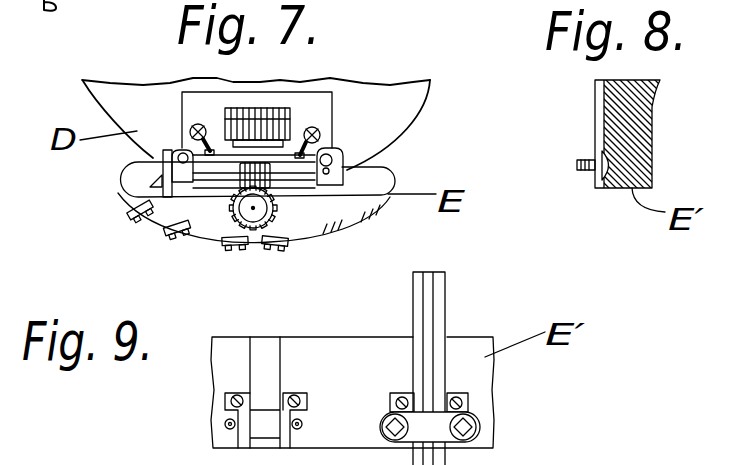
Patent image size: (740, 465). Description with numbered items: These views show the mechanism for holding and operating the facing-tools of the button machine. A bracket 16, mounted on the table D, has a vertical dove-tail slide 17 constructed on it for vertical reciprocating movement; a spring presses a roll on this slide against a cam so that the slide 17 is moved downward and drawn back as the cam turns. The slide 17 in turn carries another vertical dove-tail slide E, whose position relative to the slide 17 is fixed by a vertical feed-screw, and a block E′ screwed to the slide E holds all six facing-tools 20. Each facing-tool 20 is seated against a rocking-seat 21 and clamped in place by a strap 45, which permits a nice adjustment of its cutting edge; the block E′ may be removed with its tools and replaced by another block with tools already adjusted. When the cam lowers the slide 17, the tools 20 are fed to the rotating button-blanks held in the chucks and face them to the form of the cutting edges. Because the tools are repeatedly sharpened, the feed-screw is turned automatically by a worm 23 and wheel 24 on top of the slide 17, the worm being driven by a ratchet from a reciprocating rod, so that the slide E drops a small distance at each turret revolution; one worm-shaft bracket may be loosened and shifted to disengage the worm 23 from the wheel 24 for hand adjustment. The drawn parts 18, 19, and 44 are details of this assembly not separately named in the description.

In FIG. 7, the bracket 16 is at (320, 122).
In FIG. 7, the vertical dove-tail slide 17 is at (338, 173).
In FIG. 7, the coil 18 is at (287, 112).
In FIG. 7, the lever 19 is at (190, 127).
In FIG. 9, the facing-tool 20 is at (447, 302).
In FIG. 8, the rocking-seat 21 is at (606, 168).
In FIG. 7, the worm 23 is at (268, 187).
In FIG. 7, the wheel 24 is at (277, 222).
In FIG. 9, the screw bracket 44 is at (307, 393).
In FIG. 9, the strap 45 is at (440, 423).